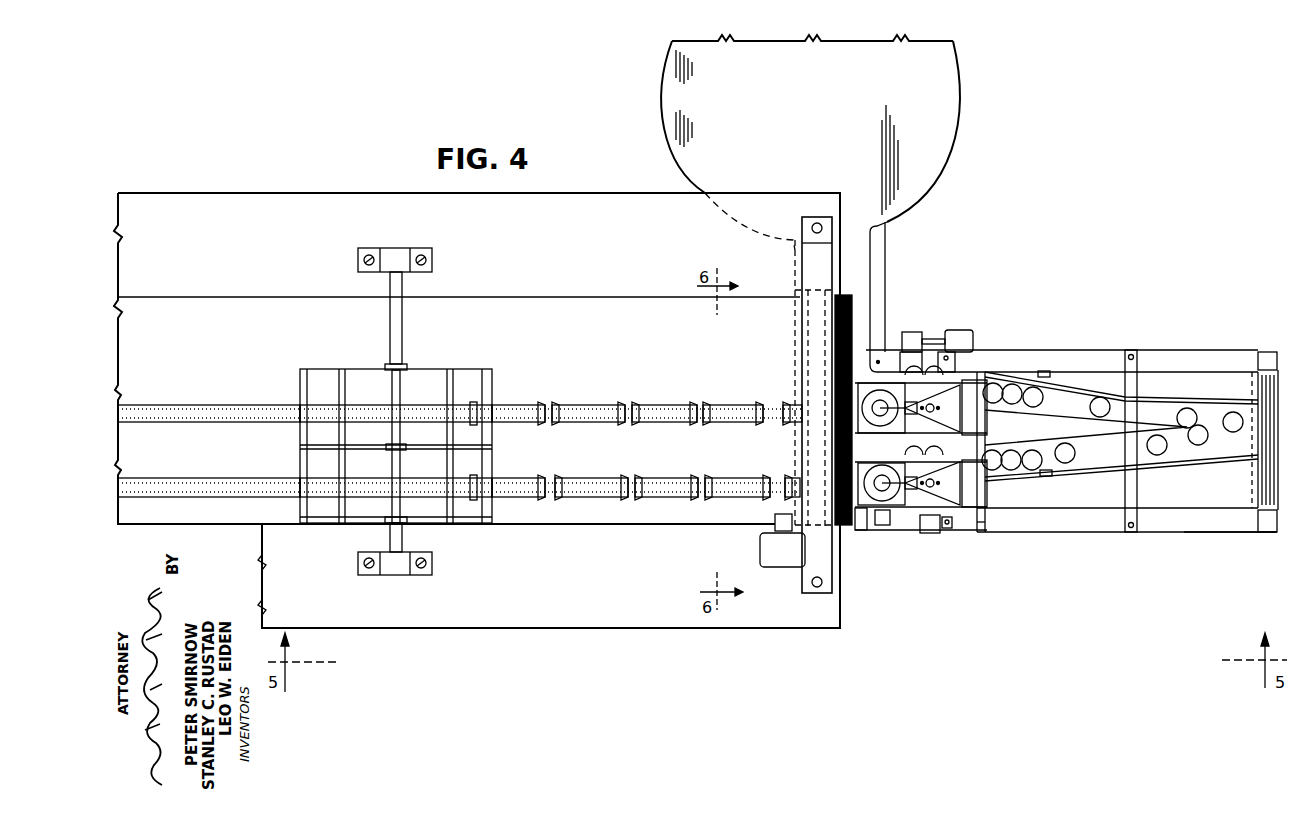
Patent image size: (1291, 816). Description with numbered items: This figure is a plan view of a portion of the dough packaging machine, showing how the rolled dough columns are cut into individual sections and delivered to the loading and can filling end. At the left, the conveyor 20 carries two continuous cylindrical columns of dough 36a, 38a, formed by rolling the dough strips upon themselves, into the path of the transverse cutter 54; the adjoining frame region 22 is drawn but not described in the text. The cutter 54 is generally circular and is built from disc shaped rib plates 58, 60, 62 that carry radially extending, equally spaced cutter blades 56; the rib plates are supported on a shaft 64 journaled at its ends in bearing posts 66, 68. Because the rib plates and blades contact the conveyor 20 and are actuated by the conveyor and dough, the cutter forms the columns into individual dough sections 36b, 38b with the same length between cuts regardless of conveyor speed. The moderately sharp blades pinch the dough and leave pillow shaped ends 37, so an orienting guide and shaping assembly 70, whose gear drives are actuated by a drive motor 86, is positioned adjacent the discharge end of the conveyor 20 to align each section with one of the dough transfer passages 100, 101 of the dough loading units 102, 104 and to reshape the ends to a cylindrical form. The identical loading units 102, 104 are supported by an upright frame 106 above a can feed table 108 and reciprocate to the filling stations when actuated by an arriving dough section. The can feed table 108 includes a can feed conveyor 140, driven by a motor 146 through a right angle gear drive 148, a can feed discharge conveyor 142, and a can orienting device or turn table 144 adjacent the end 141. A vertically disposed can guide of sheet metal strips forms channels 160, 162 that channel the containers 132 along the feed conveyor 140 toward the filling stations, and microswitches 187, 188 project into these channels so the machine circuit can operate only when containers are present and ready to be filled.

The conveyor 20 is at (246, 355).
The upper frame section 22 is at (505, 250).
The cylindrical column of dough 36a is at (268, 406).
The individual dough sections 36b is at (603, 402).
The pillow shaped ends 37 is at (558, 497).
The cylindrical column of dough 38a is at (272, 479).
The individual dough sections 38b is at (645, 475).
The transverse cutter 54 is at (348, 366).
The cutter blades 56 is at (392, 398).
The rib plate 58 is at (437, 369).
The rib plate 60 is at (484, 450).
The rib plate 62 is at (484, 518).
The shaft 64 is at (391, 345).
The bearing post 66 is at (378, 248).
The bearing post 68 is at (432, 563).
The orienting guide and shaping assembly 70 is at (800, 357).
The drive motor 86 is at (760, 549).
The dough transfer passage 100 is at (885, 500).
The dough transfer passage 101 is at (881, 392).
The dough loading unit 102 is at (882, 526).
The dough loading unit 104 is at (970, 382).
The upright frame 106 is at (990, 522).
The can feed table 108 is at (1186, 530).
The containers 132 is at (1034, 407).
The can feed conveyor 140 is at (1190, 486).
The inlet end 141 is at (1270, 492).
The can feed discharge conveyor 142 is at (862, 531).
The can orienting device 144 is at (827, 131).
The motor 146 is at (960, 332).
The right angle gear drive 148 is at (912, 332).
The channel 160 is at (1143, 406).
The channel 162 is at (1102, 452).
The microswitch 187 is at (1044, 371).
The microswitch 188 is at (1046, 477).